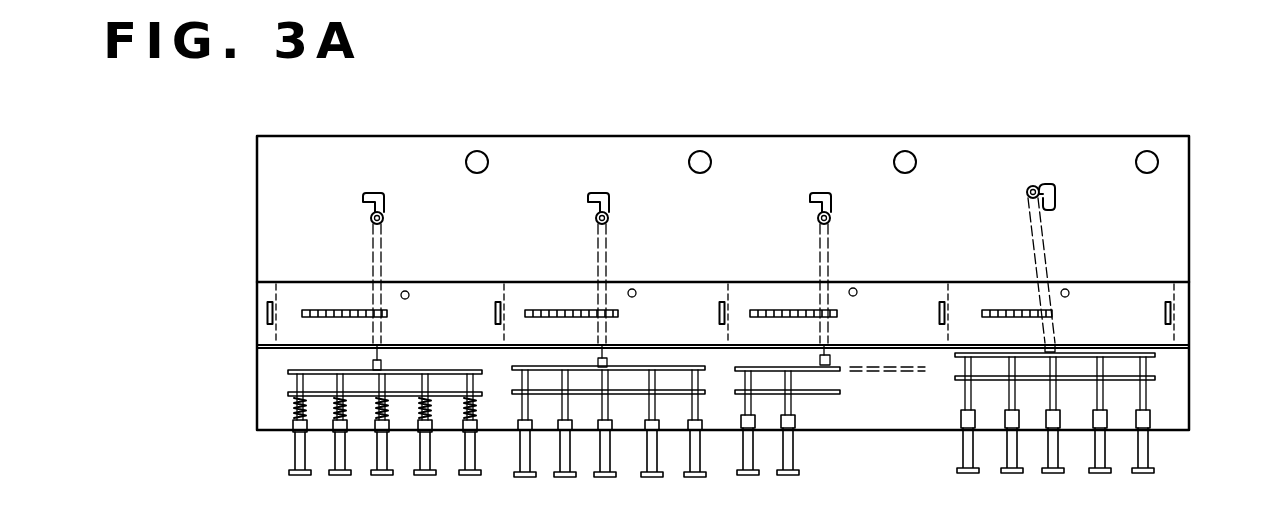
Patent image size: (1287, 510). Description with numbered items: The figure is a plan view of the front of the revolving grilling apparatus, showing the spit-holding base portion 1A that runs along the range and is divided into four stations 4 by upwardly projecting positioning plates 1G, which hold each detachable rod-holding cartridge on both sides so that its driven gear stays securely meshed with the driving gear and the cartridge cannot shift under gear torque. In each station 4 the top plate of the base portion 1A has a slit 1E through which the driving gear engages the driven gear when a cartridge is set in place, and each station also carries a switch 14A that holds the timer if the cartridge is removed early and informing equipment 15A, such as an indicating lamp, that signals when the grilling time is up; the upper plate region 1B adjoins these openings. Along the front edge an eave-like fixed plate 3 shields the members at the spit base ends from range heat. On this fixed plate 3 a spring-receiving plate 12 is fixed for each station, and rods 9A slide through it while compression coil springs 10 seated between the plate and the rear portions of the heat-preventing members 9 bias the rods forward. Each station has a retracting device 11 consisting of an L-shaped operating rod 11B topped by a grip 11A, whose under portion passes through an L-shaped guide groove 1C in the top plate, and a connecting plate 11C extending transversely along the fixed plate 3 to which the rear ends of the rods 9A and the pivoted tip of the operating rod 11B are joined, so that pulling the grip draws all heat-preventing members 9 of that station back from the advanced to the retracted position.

The spit-holding base portion 1A is at (1189, 312).
The upper plate portion 1B is at (596, 160).
The L-shaped guide groove 1C is at (365, 192).
The slit 1E is at (330, 308).
The positioning plate 1G is at (268, 305).
The fixed plate 3 is at (1165, 385).
The station 4 is at (356, 480).
The heat-preventing member 9 is at (292, 455).
The rod 9A is at (297, 382).
The compression coil spring 10 is at (292, 404).
The retracting device 11 is at (1052, 222).
The grip 11A is at (382, 212).
The L-shaped operating rod 11B is at (386, 256).
The connecting plate 11C is at (405, 368).
The spring-receiving plate 12 is at (291, 394).
The switch 14A is at (405, 291).
The informing equipment 15A is at (477, 151).